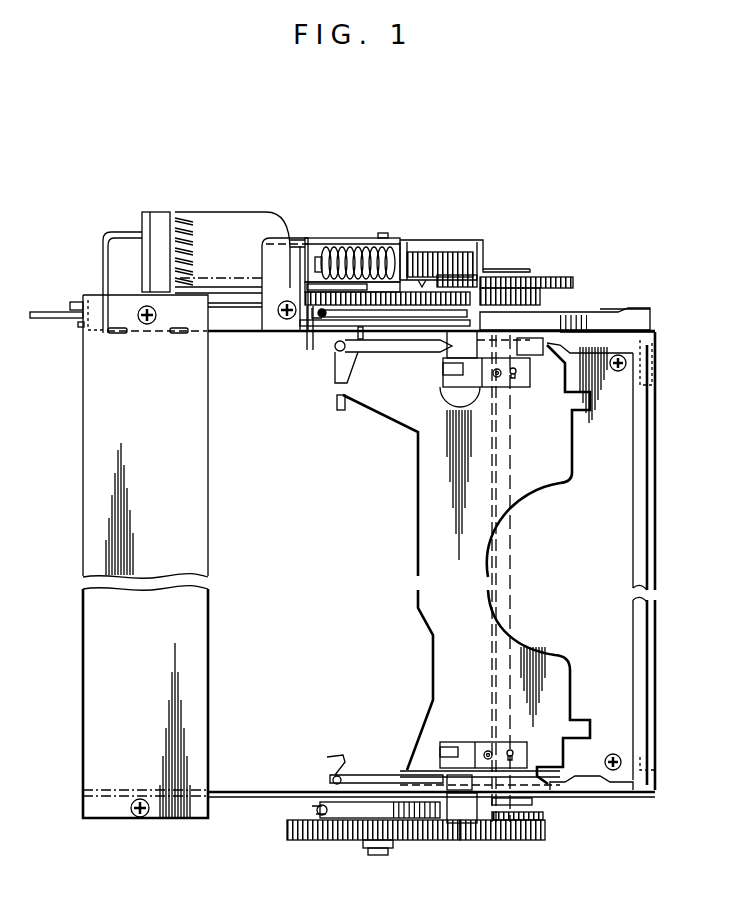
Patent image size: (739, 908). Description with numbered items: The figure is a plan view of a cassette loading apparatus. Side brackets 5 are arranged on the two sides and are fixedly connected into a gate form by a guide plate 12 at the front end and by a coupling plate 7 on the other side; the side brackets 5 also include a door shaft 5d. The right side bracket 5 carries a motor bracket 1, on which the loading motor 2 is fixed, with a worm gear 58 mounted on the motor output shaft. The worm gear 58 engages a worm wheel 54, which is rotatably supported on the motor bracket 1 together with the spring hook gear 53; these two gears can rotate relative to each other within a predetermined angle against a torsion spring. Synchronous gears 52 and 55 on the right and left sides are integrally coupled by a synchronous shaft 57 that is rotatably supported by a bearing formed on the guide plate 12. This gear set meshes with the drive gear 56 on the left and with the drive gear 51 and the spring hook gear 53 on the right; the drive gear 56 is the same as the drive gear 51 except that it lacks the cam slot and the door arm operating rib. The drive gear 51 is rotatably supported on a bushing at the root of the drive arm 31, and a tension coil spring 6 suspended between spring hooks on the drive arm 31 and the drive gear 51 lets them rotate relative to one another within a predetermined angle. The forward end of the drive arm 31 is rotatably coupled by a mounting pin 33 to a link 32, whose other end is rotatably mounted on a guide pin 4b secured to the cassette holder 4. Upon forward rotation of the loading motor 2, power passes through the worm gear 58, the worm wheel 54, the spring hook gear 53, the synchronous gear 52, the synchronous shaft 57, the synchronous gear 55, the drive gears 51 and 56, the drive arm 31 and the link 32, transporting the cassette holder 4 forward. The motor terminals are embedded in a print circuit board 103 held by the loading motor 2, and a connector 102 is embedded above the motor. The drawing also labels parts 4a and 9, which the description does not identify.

The motor bracket 1 is at (470, 238).
The loading motor 2 is at (237, 218).
The cassette holder 4 is at (419, 523).
The carriage arm 4a is at (362, 333).
The guide pin 4b is at (540, 358).
The side brackets 5 is at (230, 335).
The door shaft 5d is at (652, 388).
The tension coil spring 6 is at (313, 340).
The coupling plate 7 is at (209, 648).
The guide plate 9 is at (617, 318).
The guide plate 12 is at (614, 645).
The drive arm 31 is at (323, 330).
The link 32 is at (538, 302).
The mounting pin 33 is at (478, 298).
The drive gear 51 is at (325, 322).
The synchronous gear 52 is at (545, 306).
The spring hook gear 53 is at (423, 285).
The worm wheel 54 is at (477, 277).
The synchronous gear 55 is at (530, 830).
The drive gear 56 is at (430, 840).
The synchronous shaft 57 is at (510, 460).
The worm gear 58 is at (356, 247).
The connector 102 is at (197, 192).
The print circuit board 103 is at (157, 212).